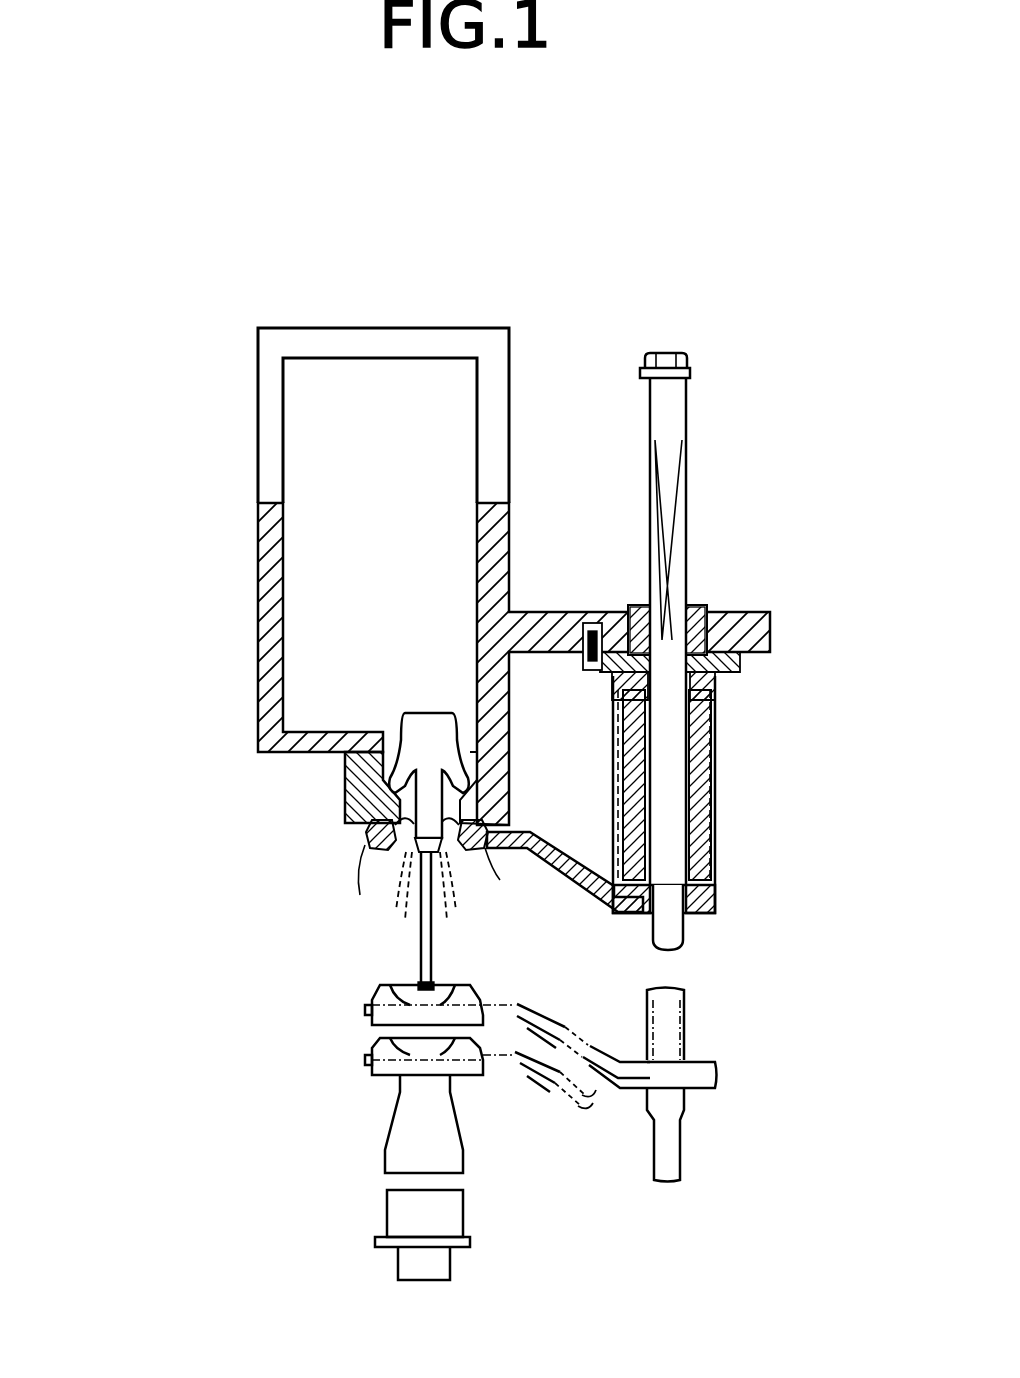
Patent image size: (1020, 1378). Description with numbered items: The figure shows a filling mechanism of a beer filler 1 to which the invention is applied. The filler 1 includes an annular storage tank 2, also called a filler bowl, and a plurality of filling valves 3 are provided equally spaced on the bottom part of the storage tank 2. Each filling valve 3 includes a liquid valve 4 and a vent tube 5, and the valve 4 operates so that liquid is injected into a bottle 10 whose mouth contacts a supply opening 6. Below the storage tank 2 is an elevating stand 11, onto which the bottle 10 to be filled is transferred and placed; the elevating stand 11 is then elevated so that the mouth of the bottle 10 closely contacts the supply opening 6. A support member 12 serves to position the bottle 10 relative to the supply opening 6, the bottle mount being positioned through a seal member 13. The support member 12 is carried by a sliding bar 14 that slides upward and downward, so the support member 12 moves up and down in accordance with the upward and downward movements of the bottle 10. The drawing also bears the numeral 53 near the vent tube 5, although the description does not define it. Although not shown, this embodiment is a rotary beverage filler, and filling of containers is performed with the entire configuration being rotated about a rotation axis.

The beer filler 1 is at (528, 308).
The storage tank 2 is at (272, 712).
The filling valve 3 is at (360, 807).
The liquid valve 4 is at (288, 755).
The vent tube 5 is at (425, 892).
The supply opening 6 is at (366, 823).
The valve stem passage 53 is at (398, 862).
The bottle 10 is at (388, 1136).
The elevating stand 11 is at (375, 1243).
The support member 12 is at (515, 1012).
The seal member 13 is at (487, 862).
The sliding bar 14 is at (672, 760).